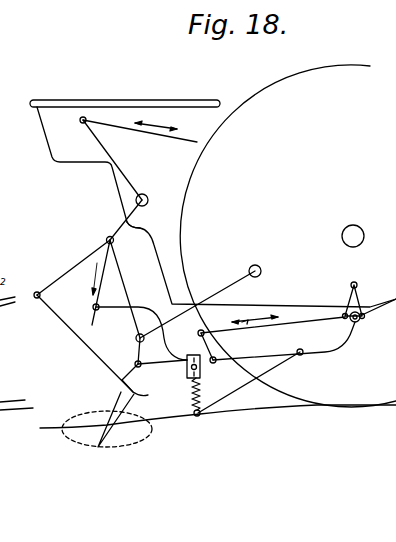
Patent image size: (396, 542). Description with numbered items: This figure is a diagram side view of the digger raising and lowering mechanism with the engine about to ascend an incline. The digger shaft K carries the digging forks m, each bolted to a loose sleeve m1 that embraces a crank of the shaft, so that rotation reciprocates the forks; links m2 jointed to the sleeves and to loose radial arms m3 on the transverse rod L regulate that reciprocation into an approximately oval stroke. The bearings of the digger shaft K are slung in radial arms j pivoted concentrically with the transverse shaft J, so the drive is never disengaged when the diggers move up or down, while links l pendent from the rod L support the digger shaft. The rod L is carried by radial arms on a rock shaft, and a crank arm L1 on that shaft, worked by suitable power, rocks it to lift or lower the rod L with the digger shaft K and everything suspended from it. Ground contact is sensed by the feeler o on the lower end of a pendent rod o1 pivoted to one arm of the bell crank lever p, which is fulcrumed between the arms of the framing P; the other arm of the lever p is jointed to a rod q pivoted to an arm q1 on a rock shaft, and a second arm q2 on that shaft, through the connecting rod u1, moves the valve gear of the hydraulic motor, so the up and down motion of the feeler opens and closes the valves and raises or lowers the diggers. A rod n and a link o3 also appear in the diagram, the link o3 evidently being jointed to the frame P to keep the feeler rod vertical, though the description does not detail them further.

The rod n is at (154, 135).
The crank arm L1 is at (112, 173).
The transverse rod L is at (106, 240).
The link l is at (124, 275).
The loose radial arm m3 is at (72, 269).
The feeler o is at (98, 303).
The link m2 is at (89, 344).
The digger shaft K is at (136, 341).
The loose sleeve m1 is at (141, 366).
The digging fork m is at (110, 416).
The framing P is at (163, 347).
The bell crank lever p is at (214, 340).
The transverse shaft J is at (261, 271).
The radial arm j is at (217, 290).
The rod q is at (276, 326).
The arm q1 is at (348, 302).
The arm q2 is at (357, 294).
The pendent rod o1 is at (199, 395).
The rod o3 is at (245, 382).
The connecting rod u1 is at (9, 313).